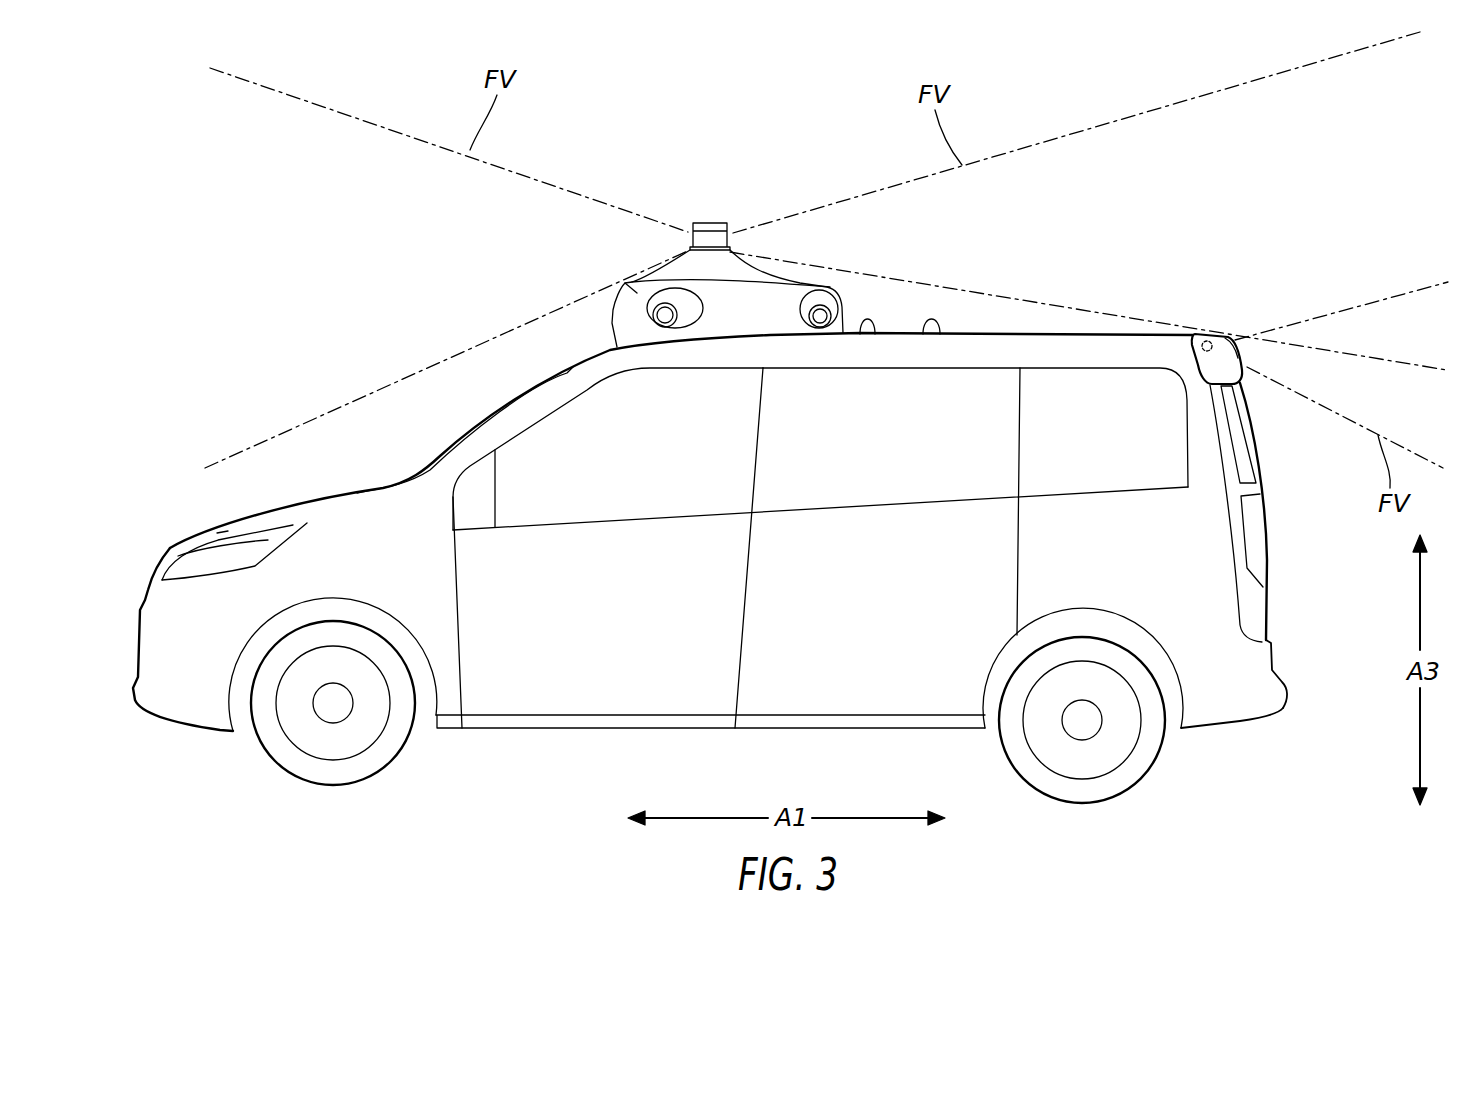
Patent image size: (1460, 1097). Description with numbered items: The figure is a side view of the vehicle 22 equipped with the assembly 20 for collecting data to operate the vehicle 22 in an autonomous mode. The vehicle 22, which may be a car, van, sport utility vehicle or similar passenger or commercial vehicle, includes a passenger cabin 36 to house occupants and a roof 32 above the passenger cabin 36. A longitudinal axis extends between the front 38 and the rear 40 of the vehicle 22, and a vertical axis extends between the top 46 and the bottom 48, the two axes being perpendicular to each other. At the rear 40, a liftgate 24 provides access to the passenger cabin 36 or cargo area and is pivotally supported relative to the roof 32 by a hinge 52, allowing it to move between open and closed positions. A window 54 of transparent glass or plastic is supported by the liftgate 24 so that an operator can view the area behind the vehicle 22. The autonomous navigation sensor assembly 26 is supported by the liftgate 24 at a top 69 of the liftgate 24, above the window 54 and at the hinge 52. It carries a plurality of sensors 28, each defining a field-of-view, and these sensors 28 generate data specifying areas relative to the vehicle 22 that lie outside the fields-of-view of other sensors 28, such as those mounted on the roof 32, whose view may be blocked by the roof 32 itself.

The assembly 20 is at (1065, 98).
The vehicle 22 is at (560, 632).
The liftgate 24 is at (1262, 493).
The autonomous navigation sensor assembly 26 is at (1244, 352).
The sensors 28 is at (707, 222).
The roof 32 is at (936, 334).
The passenger cabin 36 is at (663, 467).
The front 38 is at (138, 662).
The rear 40 is at (1289, 692).
The top 46 is at (872, 334).
The bottom 48 is at (1215, 728).
The hinge 52 is at (1208, 340).
The window 54 is at (1248, 458).
The top of the liftgate 69 is at (1225, 338).